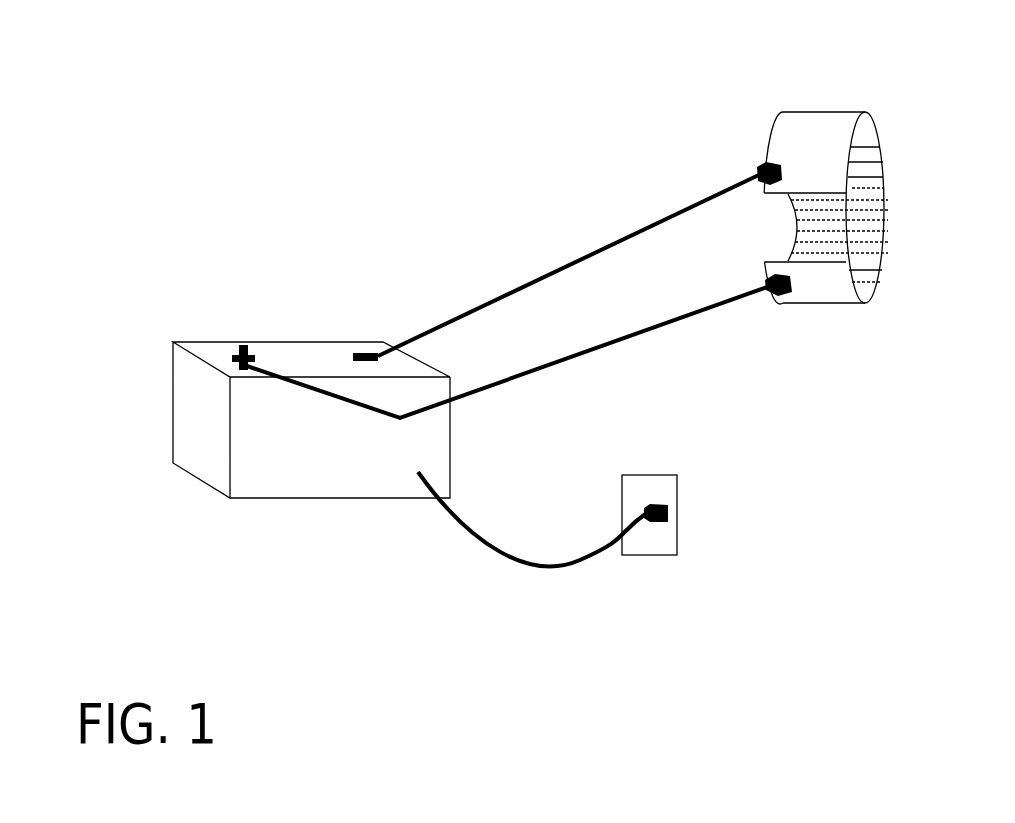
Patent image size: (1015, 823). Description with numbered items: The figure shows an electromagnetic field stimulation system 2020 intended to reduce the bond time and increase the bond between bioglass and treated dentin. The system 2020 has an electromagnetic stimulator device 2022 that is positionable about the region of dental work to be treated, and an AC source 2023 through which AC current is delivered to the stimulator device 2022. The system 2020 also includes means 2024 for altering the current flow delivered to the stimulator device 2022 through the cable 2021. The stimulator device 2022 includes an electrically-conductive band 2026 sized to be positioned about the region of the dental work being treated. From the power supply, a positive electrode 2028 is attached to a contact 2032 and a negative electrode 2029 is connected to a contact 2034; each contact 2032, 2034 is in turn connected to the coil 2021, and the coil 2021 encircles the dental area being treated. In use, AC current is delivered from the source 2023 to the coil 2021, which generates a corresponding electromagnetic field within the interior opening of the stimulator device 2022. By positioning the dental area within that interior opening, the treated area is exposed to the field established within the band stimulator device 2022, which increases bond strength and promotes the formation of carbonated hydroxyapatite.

The system 2020 is at (822, 107).
The coil 2021 is at (843, 228).
The electromagnetic stimulator device 2022 is at (880, 125).
The AC source 2023 is at (305, 505).
The means for altering the current flow 2024 is at (690, 530).
The electrically-conductive band 2026 is at (890, 165).
The positive electrode 2028 is at (233, 342).
The negative electrode 2029 is at (360, 342).
The contact 2032 is at (537, 346).
The contact 2034 is at (580, 235).